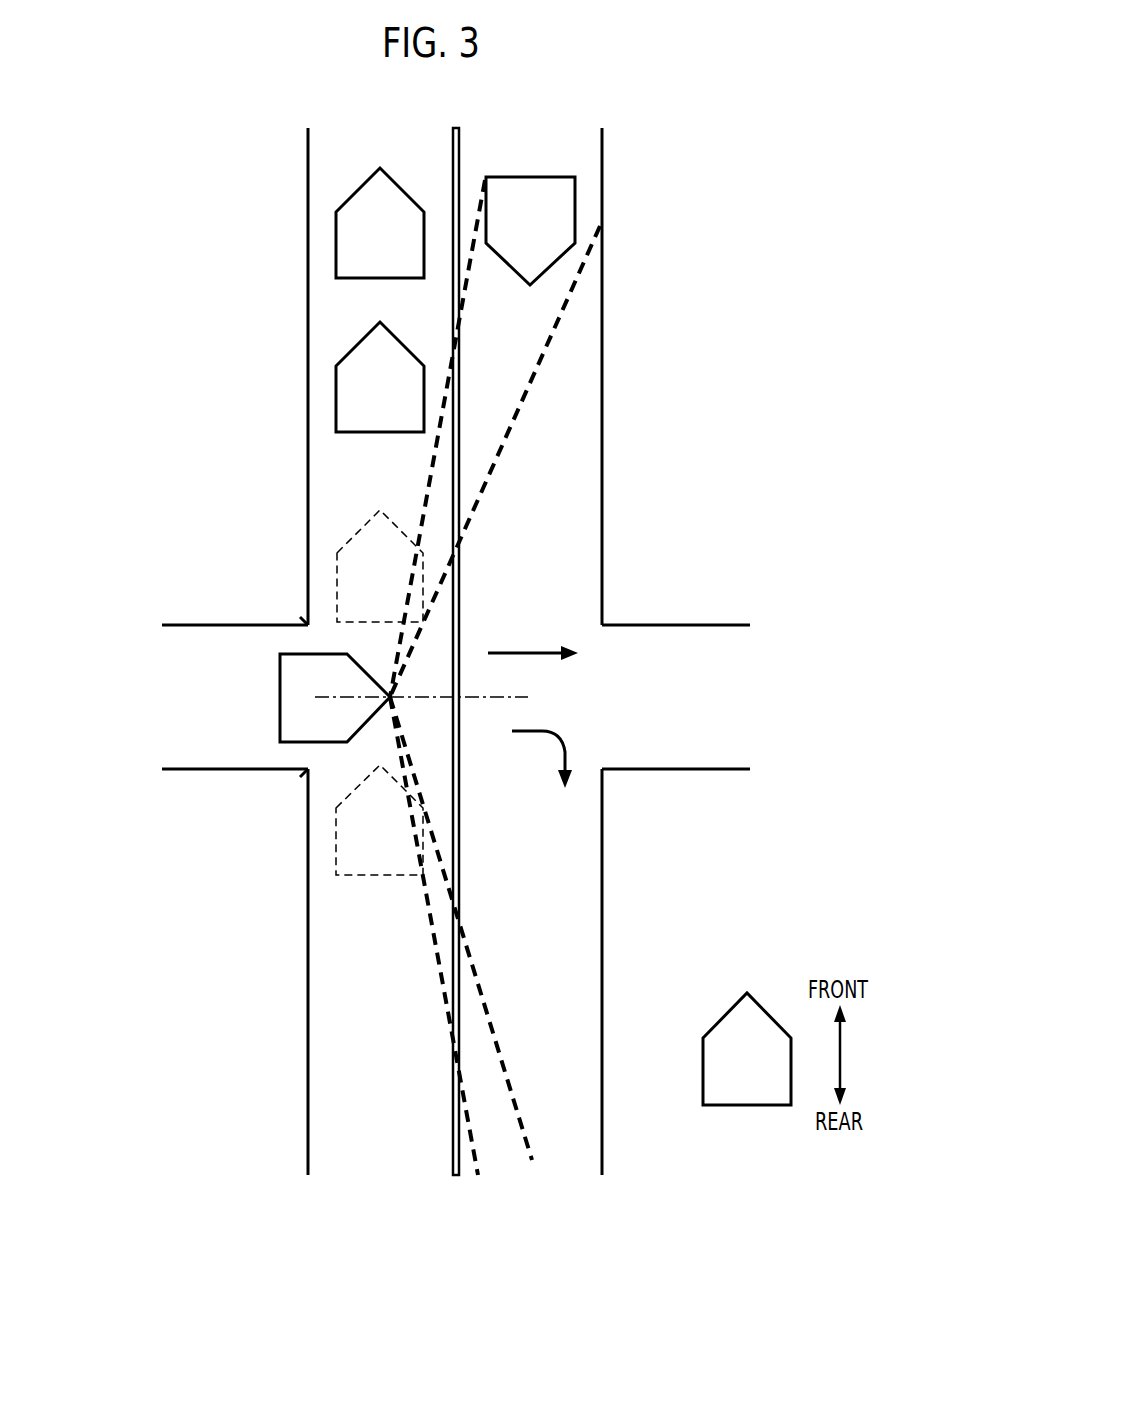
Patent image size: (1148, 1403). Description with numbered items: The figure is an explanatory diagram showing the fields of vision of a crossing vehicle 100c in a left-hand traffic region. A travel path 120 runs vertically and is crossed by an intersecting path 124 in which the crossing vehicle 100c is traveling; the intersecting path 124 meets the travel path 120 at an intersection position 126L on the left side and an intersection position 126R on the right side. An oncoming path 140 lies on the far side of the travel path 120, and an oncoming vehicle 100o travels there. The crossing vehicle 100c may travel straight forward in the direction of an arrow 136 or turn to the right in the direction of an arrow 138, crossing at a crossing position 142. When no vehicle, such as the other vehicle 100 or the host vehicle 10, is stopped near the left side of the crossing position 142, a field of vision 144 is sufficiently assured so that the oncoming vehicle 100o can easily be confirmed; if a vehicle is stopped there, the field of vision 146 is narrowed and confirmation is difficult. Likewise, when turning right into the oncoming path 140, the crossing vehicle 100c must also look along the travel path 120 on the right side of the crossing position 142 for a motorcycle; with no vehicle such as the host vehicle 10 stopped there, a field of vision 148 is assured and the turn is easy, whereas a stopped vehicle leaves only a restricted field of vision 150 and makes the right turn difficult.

The host vehicle 10 is at (336, 851).
The other vehicle 100 is at (357, 527).
The oncoming vehicle 100o is at (575, 195).
The crossing vehicle 100c is at (302, 697).
The travel path 120 is at (337, 1008).
The intersecting path 124 is at (197, 625).
The intersection position on the left side 126L is at (303, 623).
The intersection position on the right side 126R is at (304, 771).
The arrow 136 is at (510, 650).
The arrow 138 is at (548, 728).
The oncoming path 140 is at (577, 893).
The crossing position 142 is at (495, 698).
The field of vision 144 is at (464, 295).
The field of vision 146 is at (562, 313).
The field of vision 148 is at (482, 1148).
The field of vision 150 is at (508, 1072).